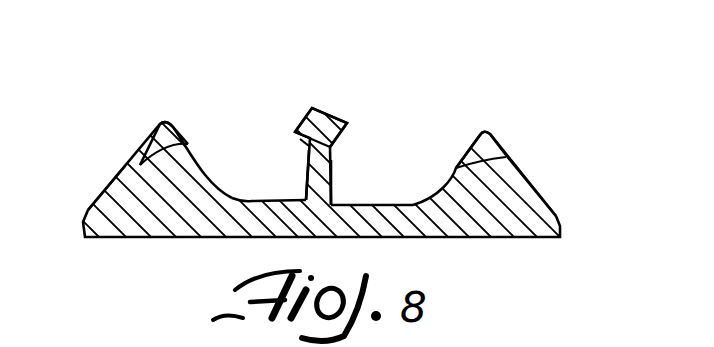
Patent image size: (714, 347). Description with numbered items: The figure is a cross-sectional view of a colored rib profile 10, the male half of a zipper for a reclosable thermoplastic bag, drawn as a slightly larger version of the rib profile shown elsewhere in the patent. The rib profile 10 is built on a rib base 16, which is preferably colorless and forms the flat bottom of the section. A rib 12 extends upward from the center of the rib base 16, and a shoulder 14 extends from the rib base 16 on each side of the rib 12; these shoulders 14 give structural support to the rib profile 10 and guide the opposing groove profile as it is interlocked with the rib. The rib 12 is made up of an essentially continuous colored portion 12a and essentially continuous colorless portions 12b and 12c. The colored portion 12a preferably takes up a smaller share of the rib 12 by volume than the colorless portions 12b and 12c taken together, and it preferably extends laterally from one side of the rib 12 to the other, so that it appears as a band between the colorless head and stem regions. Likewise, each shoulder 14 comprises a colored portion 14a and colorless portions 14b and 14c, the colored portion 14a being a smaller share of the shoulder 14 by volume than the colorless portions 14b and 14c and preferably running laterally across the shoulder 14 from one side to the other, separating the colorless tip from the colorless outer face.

The rib profile 10 is at (500, 65).
The rib 12 is at (346, 164).
The colored portion of rib 12a is at (300, 139).
The colorless portion of rib 12b is at (307, 112).
The colorless portion of rib 12c is at (307, 186).
The shoulder 14 is at (206, 148).
The colored portion of shoulder 14a is at (138, 166).
The colorless portion of shoulder 14b is at (150, 133).
The colorless portion of shoulder 14c is at (127, 188).
The rib base 16 is at (300, 238).